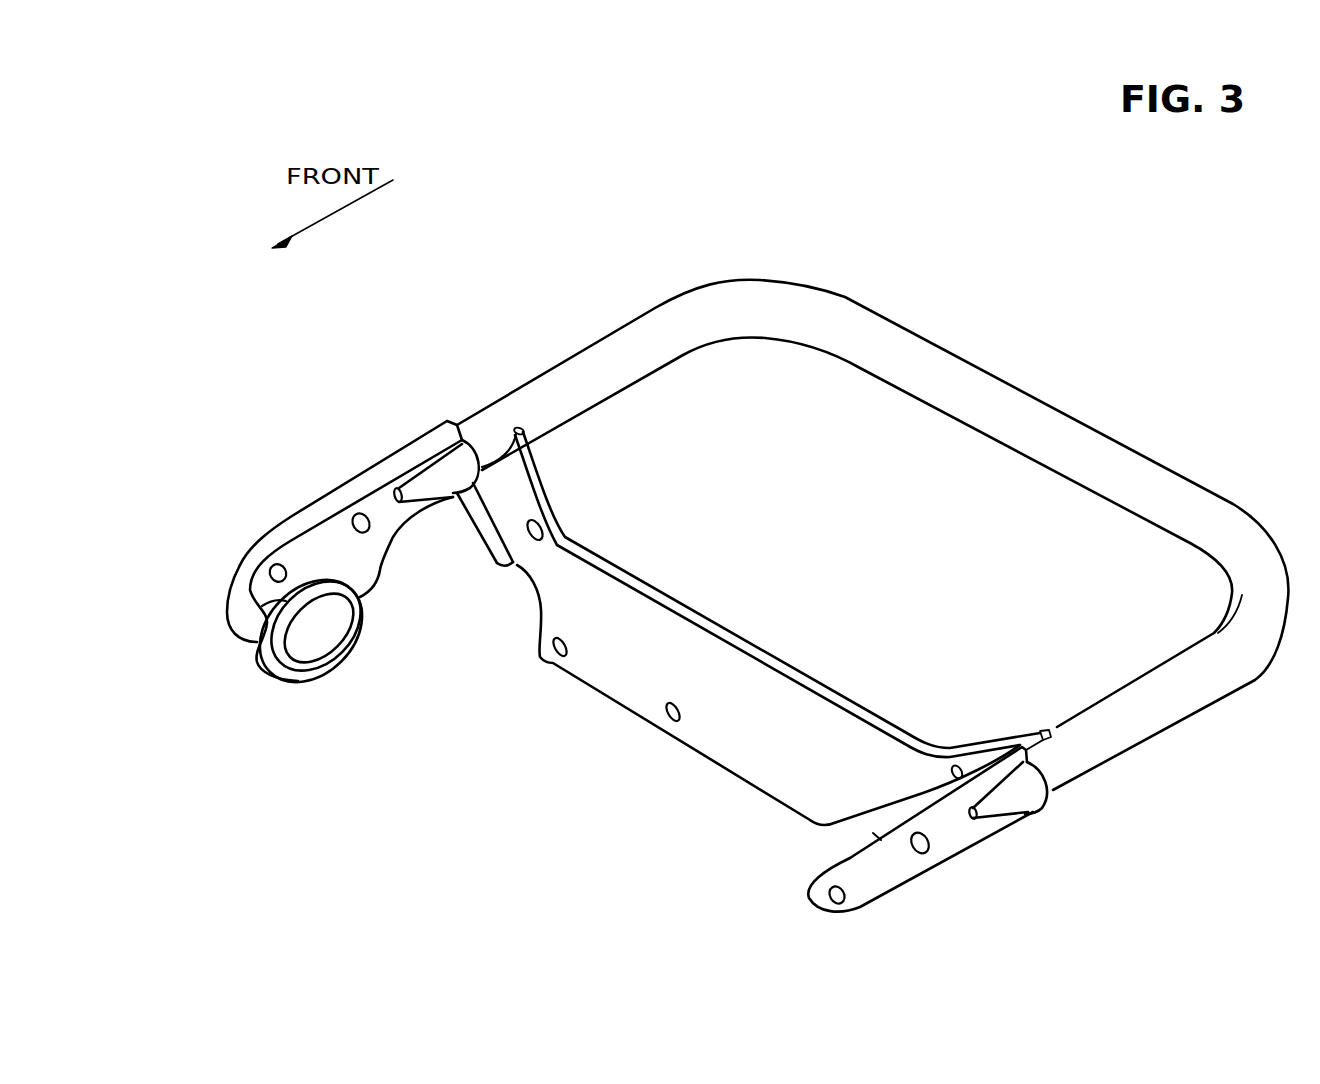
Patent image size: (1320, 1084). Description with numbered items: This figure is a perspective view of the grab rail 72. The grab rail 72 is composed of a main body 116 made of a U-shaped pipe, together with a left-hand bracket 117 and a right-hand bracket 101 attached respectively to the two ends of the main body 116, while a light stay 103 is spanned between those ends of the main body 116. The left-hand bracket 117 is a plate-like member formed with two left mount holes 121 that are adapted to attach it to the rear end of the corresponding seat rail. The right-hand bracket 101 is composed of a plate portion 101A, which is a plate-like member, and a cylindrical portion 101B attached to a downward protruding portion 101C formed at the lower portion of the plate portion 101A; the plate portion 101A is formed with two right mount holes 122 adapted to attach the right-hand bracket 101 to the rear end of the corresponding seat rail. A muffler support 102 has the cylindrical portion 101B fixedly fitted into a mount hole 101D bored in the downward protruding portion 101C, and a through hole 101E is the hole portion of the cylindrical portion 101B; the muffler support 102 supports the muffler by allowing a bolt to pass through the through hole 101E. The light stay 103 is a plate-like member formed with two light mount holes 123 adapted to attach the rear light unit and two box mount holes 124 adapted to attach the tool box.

The grab rail 72 is at (1066, 281).
The main body 116 is at (880, 332).
The left-hand bracket 117 is at (958, 856).
The right-hand bracket 101 is at (328, 477).
The plate portion 101A is at (370, 500).
The cylindrical portion 101B is at (240, 640).
The downward protruding portion 101C is at (365, 570).
The mount hole 101D is at (263, 622).
The through hole 101E is at (321, 632).
The muffler support 102 is at (297, 684).
The light stay 103 is at (722, 625).
The left mount holes 121 is at (843, 900).
The right mount holes 122 is at (282, 582).
The light mount holes 123 is at (540, 540).
The box mount holes 124 is at (562, 658).